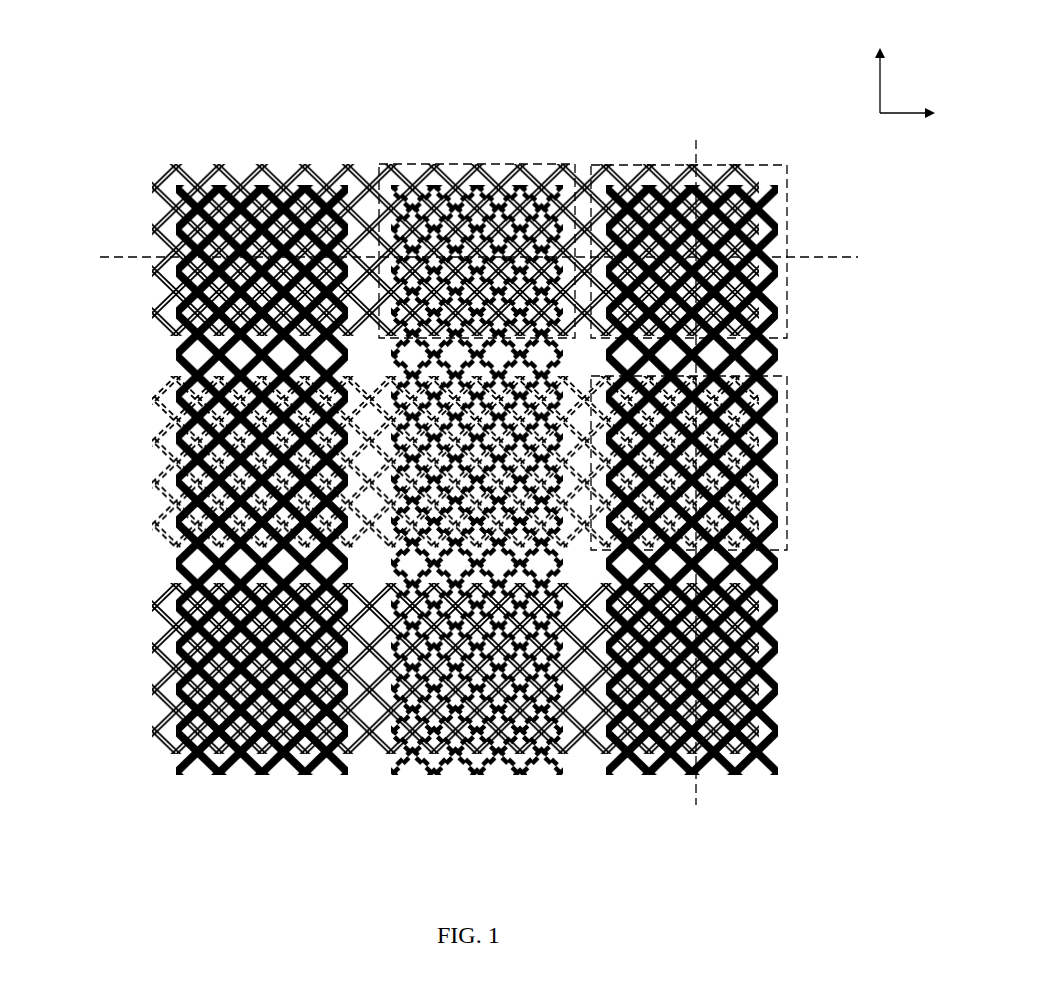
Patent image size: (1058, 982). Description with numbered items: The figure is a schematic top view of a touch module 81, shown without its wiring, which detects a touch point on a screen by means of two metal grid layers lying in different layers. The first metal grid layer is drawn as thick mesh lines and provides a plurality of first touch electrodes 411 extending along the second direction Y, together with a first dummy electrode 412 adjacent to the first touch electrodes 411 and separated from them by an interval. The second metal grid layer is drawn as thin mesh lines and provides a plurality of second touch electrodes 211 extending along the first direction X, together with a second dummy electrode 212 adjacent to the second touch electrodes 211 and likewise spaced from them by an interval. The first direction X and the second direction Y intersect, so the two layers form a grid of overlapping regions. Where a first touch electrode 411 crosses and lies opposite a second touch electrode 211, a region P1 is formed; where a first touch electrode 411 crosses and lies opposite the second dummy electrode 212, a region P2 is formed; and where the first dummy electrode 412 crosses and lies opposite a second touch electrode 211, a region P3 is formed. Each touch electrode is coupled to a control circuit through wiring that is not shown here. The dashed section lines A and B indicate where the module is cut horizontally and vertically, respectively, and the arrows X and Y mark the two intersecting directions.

The touch module 81 is at (150, 67).
The second touch electrode 211 is at (321, 164).
The second dummy electrode 212 is at (163, 401).
The first touch electrode 411 is at (777, 578).
The first dummy electrode 412 is at (504, 778).
The region where first touch electrode and second touch electrode cross P1 is at (770, 210).
The region where first touch electrode and second dummy electrode cross P2 is at (778, 418).
The region where first dummy electrode and second touch electrode cross P3 is at (534, 161).
The section line A- A is at (478, 258).
The section line B- B is at (696, 475).
The first direction X is at (918, 116).
The second direction Y is at (879, 70).